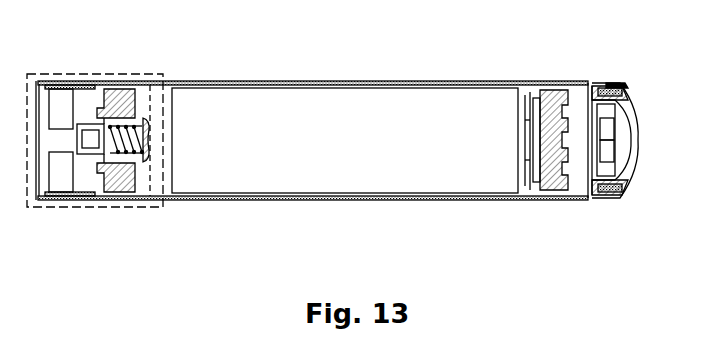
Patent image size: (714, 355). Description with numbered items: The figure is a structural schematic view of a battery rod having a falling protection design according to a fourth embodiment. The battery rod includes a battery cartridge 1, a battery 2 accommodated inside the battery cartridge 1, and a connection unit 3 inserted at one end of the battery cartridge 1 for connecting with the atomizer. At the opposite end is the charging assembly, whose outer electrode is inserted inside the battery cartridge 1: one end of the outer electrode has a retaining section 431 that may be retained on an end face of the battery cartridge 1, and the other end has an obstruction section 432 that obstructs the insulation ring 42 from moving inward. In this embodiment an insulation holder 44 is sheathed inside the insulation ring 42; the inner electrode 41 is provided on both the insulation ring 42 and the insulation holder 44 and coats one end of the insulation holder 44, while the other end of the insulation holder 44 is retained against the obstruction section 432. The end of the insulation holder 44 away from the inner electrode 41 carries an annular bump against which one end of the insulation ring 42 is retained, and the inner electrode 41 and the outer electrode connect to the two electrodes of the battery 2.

The battery cartridge 1 is at (403, 200).
The battery 2 is at (334, 175).
The connection unit 3 is at (94, 210).
The inner electrode 41 is at (656, 173).
The insulation ring 42 is at (625, 197).
The retaining section 431 is at (622, 70).
The obstruction section 432 is at (580, 78).
The insulation holder 44 is at (606, 194).